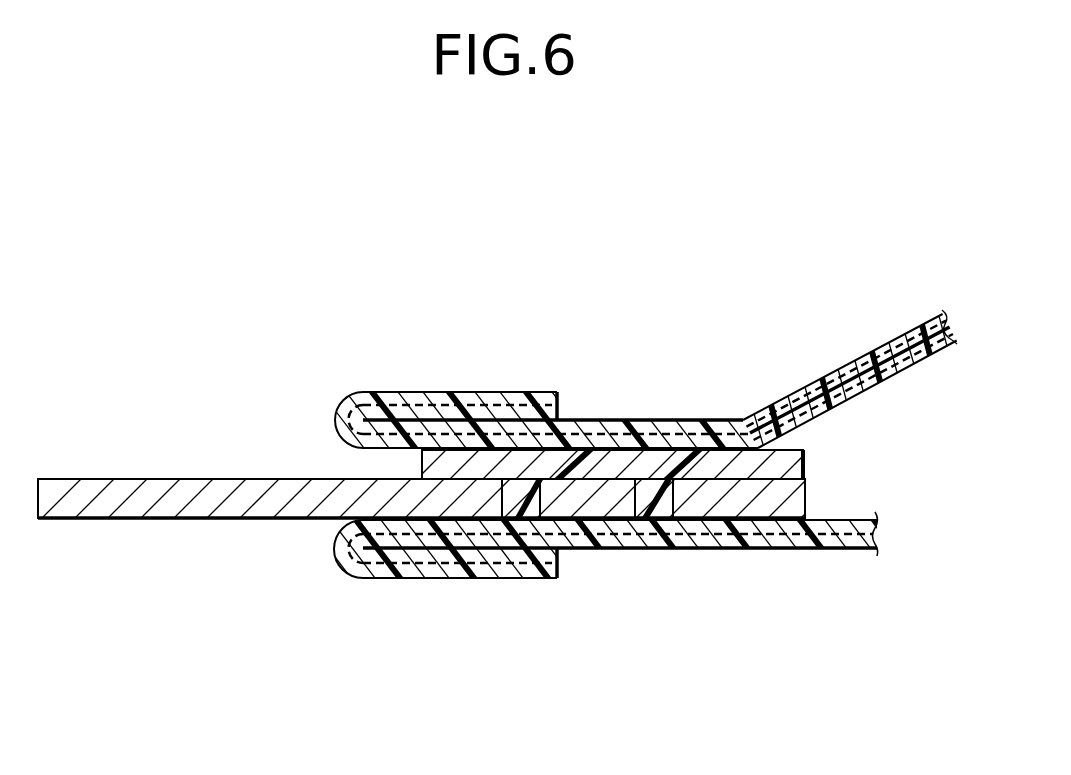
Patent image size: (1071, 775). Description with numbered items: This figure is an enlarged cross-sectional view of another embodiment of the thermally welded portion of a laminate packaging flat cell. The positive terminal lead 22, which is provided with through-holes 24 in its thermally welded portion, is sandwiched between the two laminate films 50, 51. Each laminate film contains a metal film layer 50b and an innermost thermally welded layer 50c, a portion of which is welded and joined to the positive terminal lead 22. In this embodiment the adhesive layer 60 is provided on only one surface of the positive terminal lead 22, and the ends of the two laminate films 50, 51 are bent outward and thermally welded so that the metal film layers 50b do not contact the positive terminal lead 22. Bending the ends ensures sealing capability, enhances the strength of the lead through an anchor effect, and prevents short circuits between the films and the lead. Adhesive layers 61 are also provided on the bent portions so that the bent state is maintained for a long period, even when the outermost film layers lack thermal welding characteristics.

The positive terminal lead 22 is at (128, 478).
The through-hole 24 is at (525, 490).
The laminate film 50 is at (850, 357).
The metal film layer 50b is at (504, 405).
The thermally welded layer 50c is at (348, 442).
The laminate film 51 is at (646, 548).
The adhesive layer 60 is at (422, 468).
The adhesive layer 61 is at (447, 405).